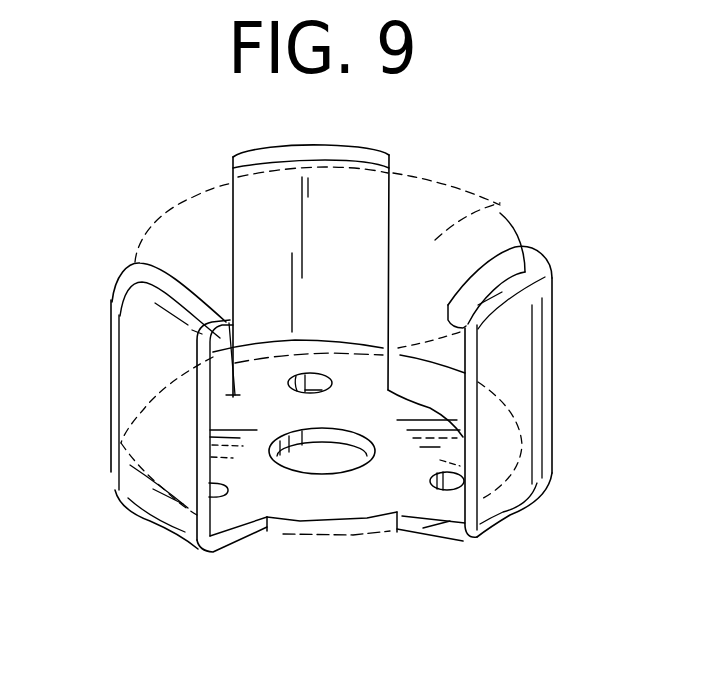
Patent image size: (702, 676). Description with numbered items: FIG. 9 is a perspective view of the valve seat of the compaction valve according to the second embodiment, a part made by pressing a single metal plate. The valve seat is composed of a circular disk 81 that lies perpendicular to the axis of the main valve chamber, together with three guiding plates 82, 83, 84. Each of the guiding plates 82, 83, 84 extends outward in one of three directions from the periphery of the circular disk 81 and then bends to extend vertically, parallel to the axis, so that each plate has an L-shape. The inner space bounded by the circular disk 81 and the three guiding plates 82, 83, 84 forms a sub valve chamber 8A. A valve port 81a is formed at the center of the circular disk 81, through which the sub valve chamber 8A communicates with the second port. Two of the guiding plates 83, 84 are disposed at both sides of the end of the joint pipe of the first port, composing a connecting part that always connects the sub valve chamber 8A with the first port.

The sub valve chamber 8A is at (500, 203).
The circular disk 81 is at (318, 496).
The valve port 81a is at (322, 465).
The guiding plate 82 is at (115, 490).
The guiding plate 83 is at (233, 218).
The guiding plate 84 is at (520, 362).